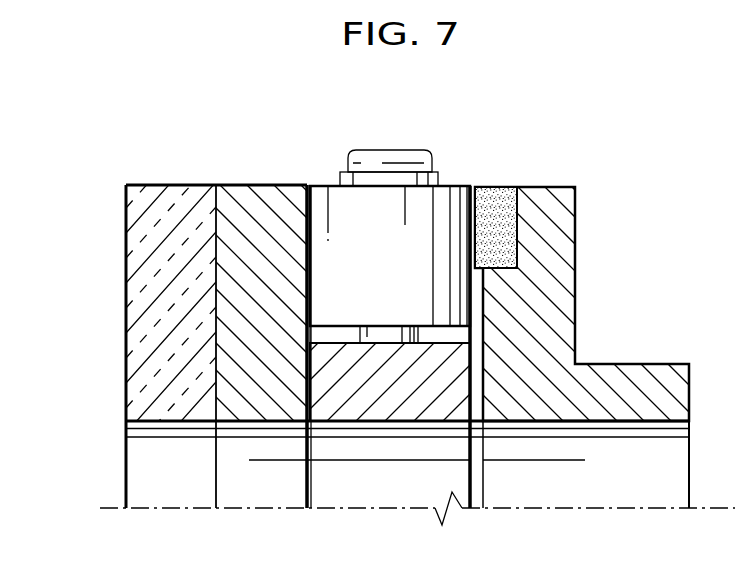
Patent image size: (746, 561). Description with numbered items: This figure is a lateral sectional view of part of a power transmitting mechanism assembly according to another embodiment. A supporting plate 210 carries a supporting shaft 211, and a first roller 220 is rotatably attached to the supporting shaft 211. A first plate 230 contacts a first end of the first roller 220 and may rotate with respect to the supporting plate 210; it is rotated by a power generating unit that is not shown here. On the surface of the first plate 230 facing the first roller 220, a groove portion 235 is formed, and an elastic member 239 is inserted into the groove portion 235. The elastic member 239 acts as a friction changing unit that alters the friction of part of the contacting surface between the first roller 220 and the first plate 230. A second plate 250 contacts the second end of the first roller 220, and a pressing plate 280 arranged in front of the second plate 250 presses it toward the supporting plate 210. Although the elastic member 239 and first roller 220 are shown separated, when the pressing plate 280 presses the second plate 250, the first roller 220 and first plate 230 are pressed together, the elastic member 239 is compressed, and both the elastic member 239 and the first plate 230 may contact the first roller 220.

The supporting plate 210 is at (456, 376).
The supporting shaft 211 is at (408, 333).
The first roller 220 is at (322, 192).
The first plate 230 is at (562, 223).
The groove portion 235 is at (517, 228).
The elastic member 239 is at (495, 198).
The second plate 250 is at (228, 283).
The pressing plate 280 is at (142, 347).